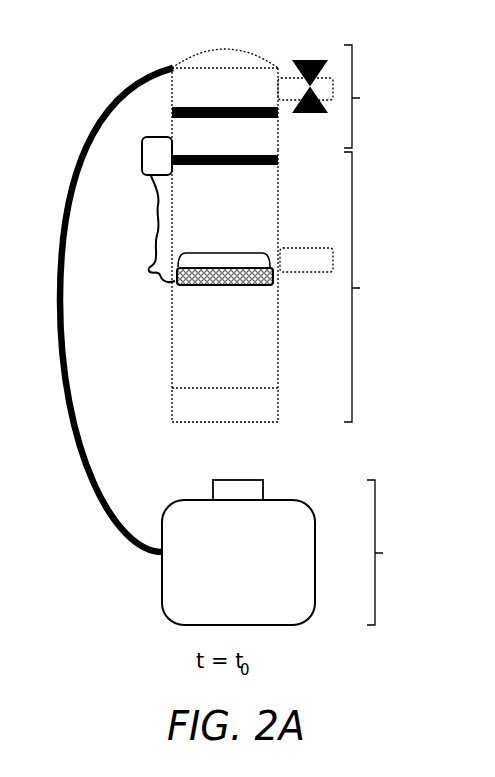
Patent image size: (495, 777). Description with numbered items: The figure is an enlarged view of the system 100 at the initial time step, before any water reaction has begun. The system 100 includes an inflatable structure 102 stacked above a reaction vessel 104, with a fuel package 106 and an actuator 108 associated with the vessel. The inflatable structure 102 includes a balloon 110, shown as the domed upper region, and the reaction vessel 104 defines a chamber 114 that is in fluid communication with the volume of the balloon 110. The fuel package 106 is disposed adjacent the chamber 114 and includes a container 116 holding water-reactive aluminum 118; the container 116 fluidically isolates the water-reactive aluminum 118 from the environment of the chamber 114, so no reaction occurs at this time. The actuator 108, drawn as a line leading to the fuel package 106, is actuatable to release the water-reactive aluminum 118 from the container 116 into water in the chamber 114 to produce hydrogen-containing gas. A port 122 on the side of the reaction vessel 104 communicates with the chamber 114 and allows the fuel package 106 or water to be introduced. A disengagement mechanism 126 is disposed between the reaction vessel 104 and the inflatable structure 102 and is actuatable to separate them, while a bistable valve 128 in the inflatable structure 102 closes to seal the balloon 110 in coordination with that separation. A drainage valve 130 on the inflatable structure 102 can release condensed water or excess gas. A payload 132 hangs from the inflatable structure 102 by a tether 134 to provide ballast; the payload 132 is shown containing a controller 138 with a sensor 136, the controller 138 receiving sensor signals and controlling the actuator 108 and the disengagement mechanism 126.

The system 100 is at (138, 29).
The inflatable structure 102 is at (284, 97).
The reaction vessel 104 is at (284, 286).
The fuel package 106 is at (223, 251).
The actuator 108 is at (149, 268).
The balloon 110 is at (205, 50).
The chamber 114 is at (258, 217).
The container 116 is at (254, 293).
The water-reactive aluminum 118 is at (212, 287).
The port 122 is at (298, 249).
The disengagement mechanism 126 is at (142, 173).
The bistable valve 128 is at (172, 113).
The drainage valve 130 is at (317, 62).
The payload 132 is at (292, 552).
The tether 134 is at (70, 367).
The sensor 136 is at (264, 485).
The controller 138 is at (238, 562).